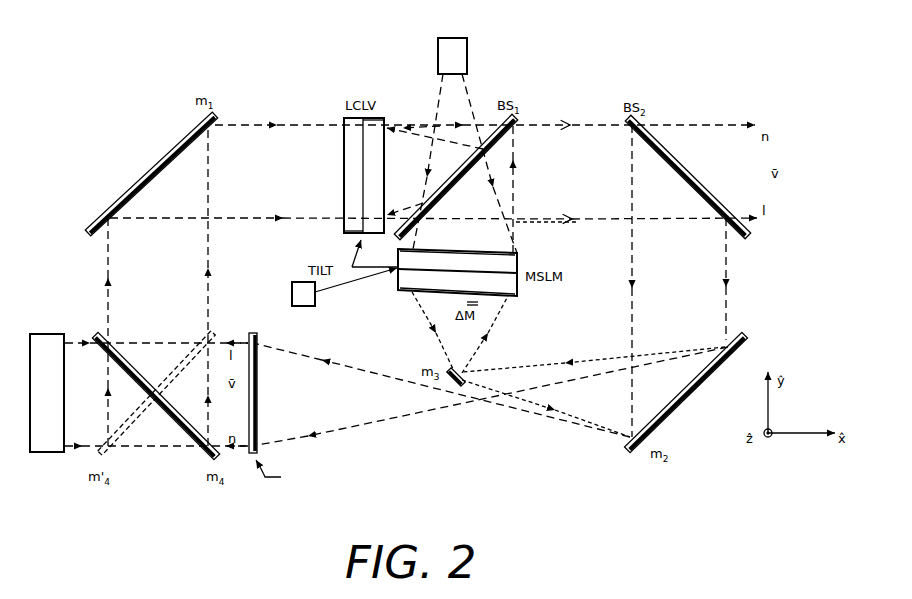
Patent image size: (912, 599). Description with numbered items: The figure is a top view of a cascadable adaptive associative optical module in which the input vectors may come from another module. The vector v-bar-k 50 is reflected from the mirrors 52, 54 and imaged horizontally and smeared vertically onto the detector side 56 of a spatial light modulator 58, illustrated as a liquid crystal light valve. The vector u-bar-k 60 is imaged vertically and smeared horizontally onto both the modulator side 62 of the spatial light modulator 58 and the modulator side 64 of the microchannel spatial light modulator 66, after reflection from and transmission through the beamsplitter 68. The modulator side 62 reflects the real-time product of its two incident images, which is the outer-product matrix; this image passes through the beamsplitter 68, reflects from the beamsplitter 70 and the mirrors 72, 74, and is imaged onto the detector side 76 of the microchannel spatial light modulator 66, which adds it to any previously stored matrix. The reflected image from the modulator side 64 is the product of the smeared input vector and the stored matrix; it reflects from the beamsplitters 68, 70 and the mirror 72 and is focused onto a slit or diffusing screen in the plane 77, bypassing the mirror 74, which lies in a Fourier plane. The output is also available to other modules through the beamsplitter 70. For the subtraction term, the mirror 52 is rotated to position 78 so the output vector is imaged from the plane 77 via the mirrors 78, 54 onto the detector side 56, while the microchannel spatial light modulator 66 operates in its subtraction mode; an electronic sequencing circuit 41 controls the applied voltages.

The electronic sequencing circuit 41 is at (305, 306).
The vector v-bar-k 50 is at (46, 334).
The mirror 52 is at (105, 456).
The mirror 54 is at (113, 206).
The detector side of SLM 56 is at (345, 118).
The spatial light modulator (SLM) 58 is at (361, 234).
The vector u-bar-k 60 is at (460, 37).
The modulator side of SLM 62 is at (381, 118).
The modulator side of MSLM 64 is at (516, 258).
The microchannel spatial light modulator (MSLM) 66 is at (397, 272).
The beamsplitter 68 is at (514, 117).
The beamsplitter 70 is at (628, 117).
The mirror 72 is at (628, 453).
The mirror 74 is at (456, 384).
The detector side of MSLM 76 is at (516, 288).
The plane 77 is at (249, 455).
The mirror position 78 is at (201, 455).